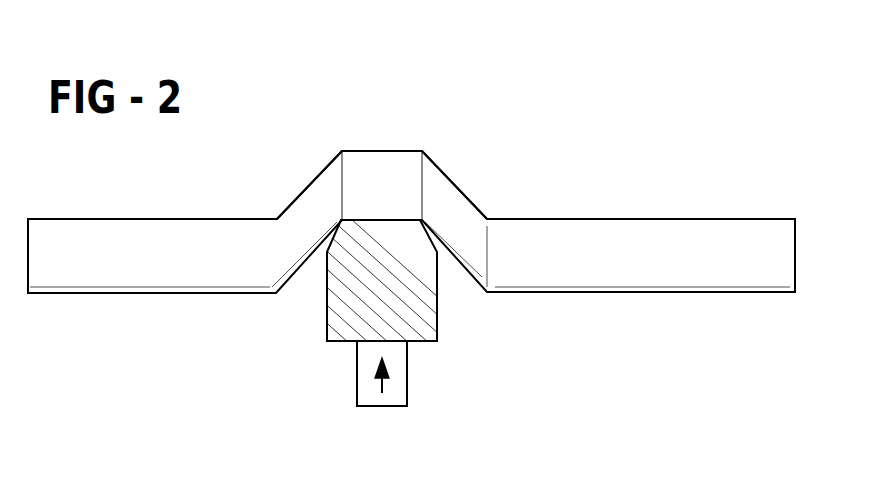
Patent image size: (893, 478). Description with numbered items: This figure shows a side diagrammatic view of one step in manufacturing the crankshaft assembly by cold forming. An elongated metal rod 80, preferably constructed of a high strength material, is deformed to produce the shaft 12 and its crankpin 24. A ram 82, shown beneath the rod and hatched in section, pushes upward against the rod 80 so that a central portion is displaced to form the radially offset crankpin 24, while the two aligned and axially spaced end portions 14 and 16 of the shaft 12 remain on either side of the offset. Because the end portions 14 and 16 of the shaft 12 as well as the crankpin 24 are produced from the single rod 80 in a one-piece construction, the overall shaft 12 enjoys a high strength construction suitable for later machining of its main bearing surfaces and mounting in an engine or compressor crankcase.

The shaft 12 is at (140, 293).
The end portion 14 is at (185, 219).
The end portion 16 is at (662, 219).
The crankpin 24 is at (387, 158).
The elongated metal rod 80 is at (797, 243).
The ram 82 is at (437, 307).